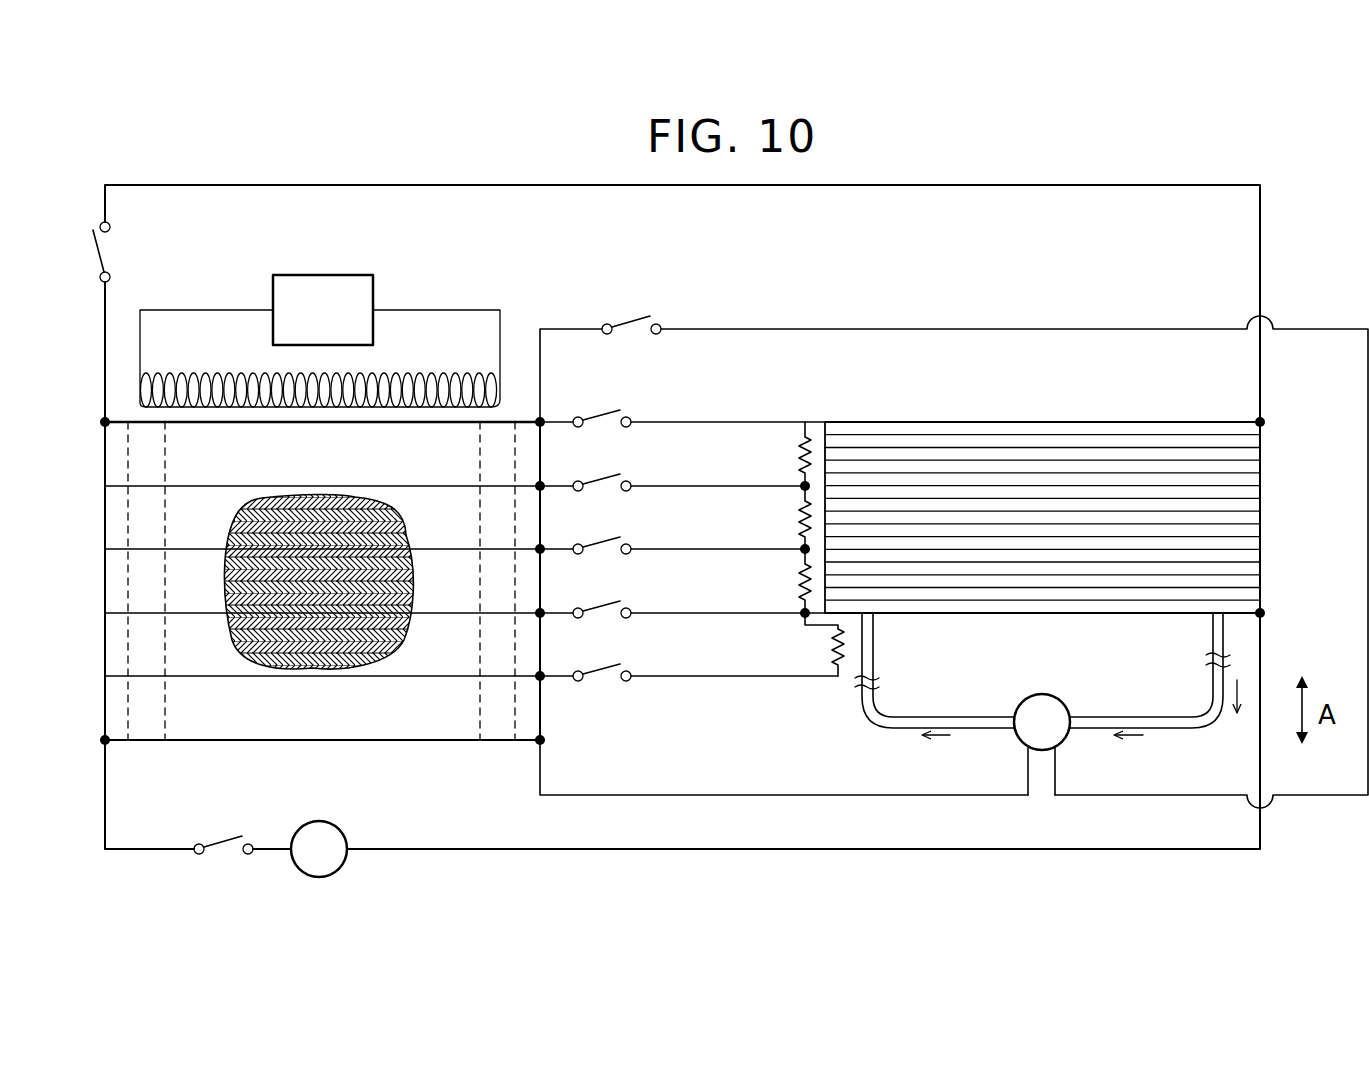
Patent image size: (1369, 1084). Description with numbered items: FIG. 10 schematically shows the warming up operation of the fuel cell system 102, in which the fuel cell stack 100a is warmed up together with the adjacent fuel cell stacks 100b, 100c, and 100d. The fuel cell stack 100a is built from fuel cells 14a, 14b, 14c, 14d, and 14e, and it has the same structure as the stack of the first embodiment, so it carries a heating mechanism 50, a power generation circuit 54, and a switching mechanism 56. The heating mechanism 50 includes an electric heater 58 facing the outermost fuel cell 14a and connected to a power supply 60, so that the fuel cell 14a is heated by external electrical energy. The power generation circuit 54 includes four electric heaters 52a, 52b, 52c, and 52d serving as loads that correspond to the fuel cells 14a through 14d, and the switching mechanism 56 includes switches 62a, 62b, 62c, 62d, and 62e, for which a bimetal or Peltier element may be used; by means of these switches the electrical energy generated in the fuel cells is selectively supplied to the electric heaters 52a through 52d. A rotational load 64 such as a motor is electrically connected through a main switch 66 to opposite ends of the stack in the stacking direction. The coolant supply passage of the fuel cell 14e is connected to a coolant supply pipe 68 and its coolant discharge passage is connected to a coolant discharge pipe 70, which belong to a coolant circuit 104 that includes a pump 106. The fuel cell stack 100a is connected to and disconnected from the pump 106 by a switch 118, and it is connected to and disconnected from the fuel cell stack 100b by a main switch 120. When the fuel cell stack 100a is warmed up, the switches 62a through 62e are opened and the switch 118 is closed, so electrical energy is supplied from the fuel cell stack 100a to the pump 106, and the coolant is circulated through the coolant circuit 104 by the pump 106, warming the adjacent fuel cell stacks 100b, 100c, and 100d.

The fuel cell system 102 is at (938, 160).
The main switch 120 is at (100, 256).
The heating mechanism 50 is at (320, 317).
The power supply 60 is at (360, 276).
The electric heater 58 is at (429, 372).
The fuel cell 14a is at (174, 457).
The fuel cell 14b is at (174, 520).
The fuel cell 14c is at (174, 583).
The fuel cell 14d is at (174, 647).
The fuel cell 14e is at (174, 710).
The power generation circuit 54 is at (846, 342).
The switch 118 is at (624, 320).
The fuel cell stack 100a is at (561, 381).
The switching mechanism 56 is at (604, 568).
The switch 62a is at (600, 412).
The switch 62b is at (600, 476).
The switch 62c is at (600, 539).
The switch 62d is at (600, 603).
The switch 62e is at (600, 666).
The electric heater 52a is at (798, 458).
The electric heater 52b is at (798, 521).
The electric heater 52c is at (798, 584).
The electric heater 52d is at (828, 651).
The fuel cell stack 100b is at (1265, 461).
The fuel cell stack 100c is at (1265, 523).
The fuel cell stack 100d is at (1265, 585).
The coolant circuit 104 is at (1046, 674).
The coolant supply pipe 68 is at (875, 651).
The coolant discharge pipe 70 is at (1208, 640).
The pump 106 is at (1045, 694).
The main switch 66 is at (221, 835).
The rotational load 64 is at (319, 821).